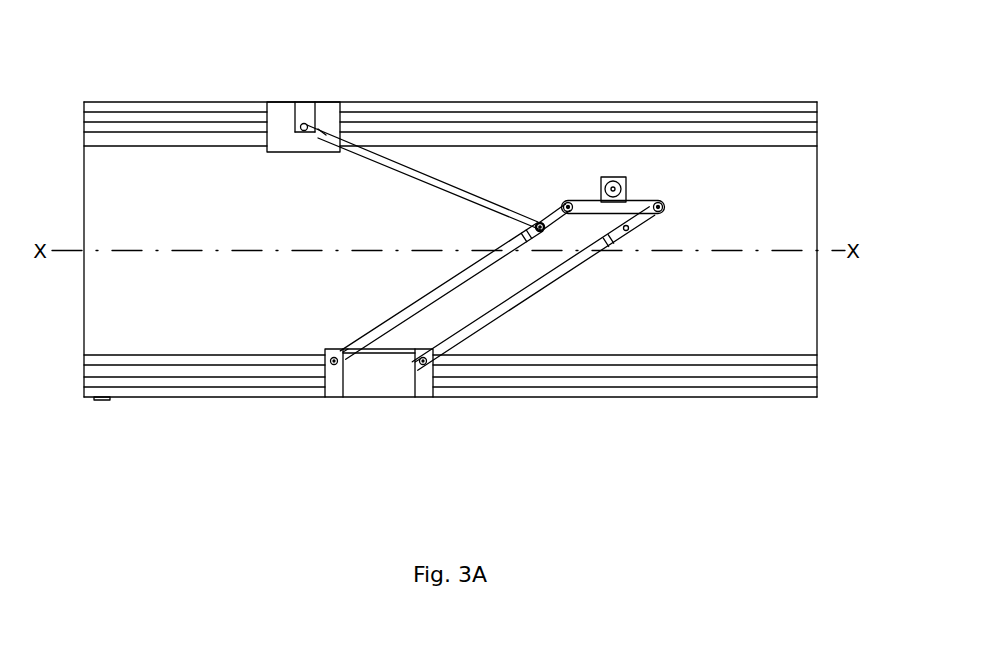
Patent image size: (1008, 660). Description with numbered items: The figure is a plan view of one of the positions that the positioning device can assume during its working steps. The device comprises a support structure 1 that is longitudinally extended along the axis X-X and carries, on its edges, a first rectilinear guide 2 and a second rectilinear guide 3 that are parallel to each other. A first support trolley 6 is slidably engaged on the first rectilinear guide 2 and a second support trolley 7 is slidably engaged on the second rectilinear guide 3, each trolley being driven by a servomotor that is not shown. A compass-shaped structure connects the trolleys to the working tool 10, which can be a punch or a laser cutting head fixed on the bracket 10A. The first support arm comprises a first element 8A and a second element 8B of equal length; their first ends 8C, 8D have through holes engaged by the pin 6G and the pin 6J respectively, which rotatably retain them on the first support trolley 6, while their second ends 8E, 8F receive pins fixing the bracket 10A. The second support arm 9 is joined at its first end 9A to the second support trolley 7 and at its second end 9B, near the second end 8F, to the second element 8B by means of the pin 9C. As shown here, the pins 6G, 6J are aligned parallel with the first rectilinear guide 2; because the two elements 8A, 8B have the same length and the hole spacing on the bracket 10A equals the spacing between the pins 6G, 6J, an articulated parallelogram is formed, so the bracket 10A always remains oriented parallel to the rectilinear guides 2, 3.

The support structure 1 is at (797, 327).
The first rectilinear guide 2 is at (773, 373).
The second rectilinear guide 3 is at (778, 128).
The first support trolley 6 is at (375, 382).
The pin 6J is at (333, 363).
The pin 6G is at (425, 365).
The second support trolley 7 is at (285, 108).
The first element 8A is at (498, 312).
The second element 8B is at (405, 313).
The first end 8C is at (433, 354).
The first end 8D is at (347, 348).
The second end 8E is at (637, 223).
The second end 8F is at (563, 203).
The second support arm 9 is at (392, 163).
The first end 9A is at (323, 133).
The second end 9B is at (537, 223).
The pin 9C is at (538, 223).
The working tool 10 is at (613, 177).
The bracket 10A is at (642, 202).